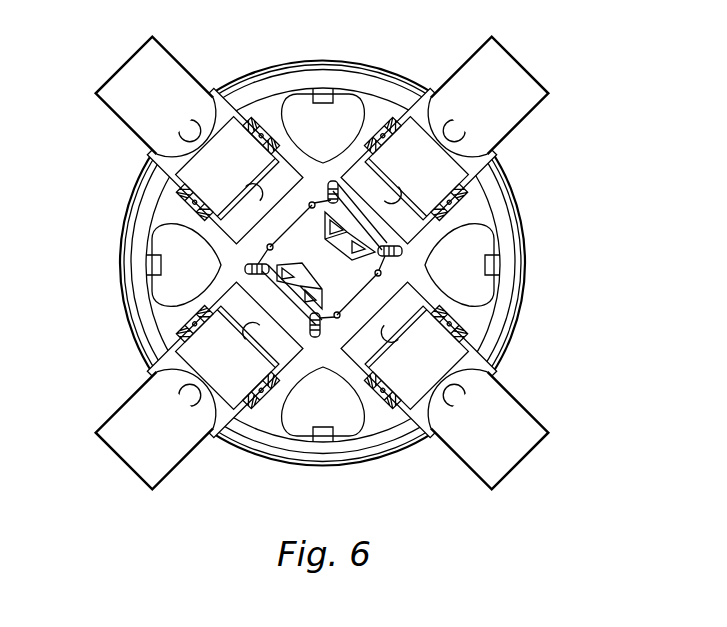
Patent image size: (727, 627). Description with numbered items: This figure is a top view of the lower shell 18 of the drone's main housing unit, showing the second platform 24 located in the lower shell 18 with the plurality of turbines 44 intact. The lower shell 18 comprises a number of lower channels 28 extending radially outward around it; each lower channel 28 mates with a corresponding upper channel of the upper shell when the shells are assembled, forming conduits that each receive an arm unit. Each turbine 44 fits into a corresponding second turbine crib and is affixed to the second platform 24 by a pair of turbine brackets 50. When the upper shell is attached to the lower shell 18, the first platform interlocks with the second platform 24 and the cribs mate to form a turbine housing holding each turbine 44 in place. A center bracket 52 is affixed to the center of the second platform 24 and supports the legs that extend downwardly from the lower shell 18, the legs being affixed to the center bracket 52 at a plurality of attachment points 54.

The lower shell 18 is at (366, 466).
The second platform 24 is at (257, 436).
The lower channel 28 is at (139, 93).
The turbine 44 is at (197, 173).
The turbine bracket 50 is at (270, 121).
The center bracket 52 is at (348, 272).
The attachment point 54 is at (245, 270).